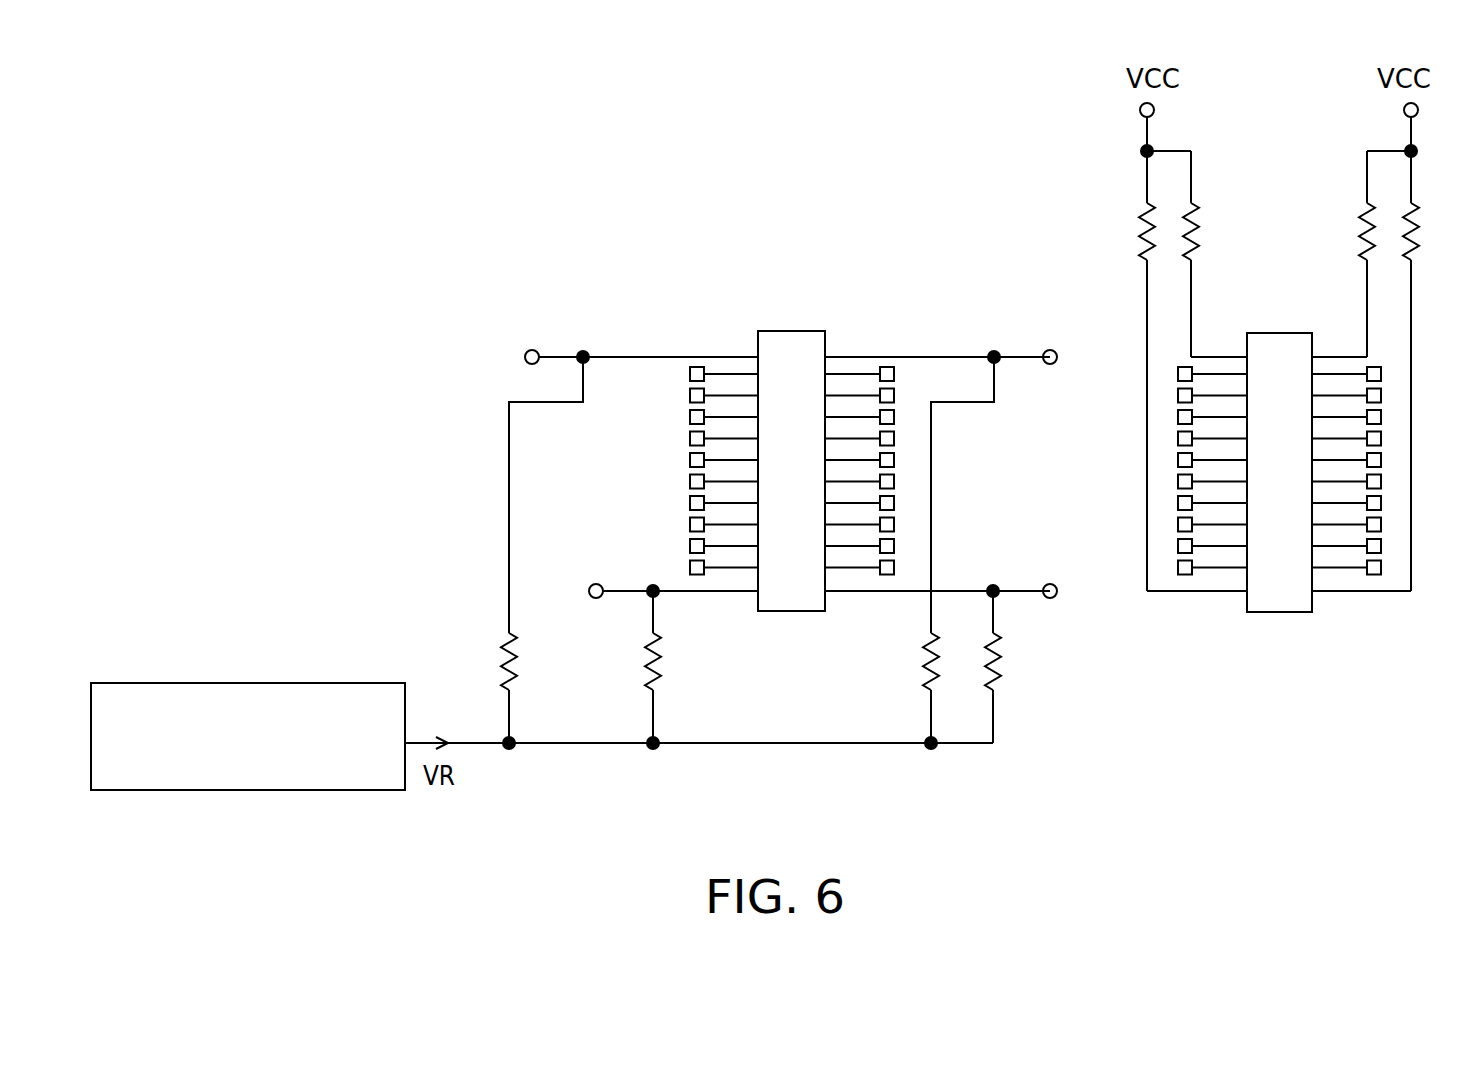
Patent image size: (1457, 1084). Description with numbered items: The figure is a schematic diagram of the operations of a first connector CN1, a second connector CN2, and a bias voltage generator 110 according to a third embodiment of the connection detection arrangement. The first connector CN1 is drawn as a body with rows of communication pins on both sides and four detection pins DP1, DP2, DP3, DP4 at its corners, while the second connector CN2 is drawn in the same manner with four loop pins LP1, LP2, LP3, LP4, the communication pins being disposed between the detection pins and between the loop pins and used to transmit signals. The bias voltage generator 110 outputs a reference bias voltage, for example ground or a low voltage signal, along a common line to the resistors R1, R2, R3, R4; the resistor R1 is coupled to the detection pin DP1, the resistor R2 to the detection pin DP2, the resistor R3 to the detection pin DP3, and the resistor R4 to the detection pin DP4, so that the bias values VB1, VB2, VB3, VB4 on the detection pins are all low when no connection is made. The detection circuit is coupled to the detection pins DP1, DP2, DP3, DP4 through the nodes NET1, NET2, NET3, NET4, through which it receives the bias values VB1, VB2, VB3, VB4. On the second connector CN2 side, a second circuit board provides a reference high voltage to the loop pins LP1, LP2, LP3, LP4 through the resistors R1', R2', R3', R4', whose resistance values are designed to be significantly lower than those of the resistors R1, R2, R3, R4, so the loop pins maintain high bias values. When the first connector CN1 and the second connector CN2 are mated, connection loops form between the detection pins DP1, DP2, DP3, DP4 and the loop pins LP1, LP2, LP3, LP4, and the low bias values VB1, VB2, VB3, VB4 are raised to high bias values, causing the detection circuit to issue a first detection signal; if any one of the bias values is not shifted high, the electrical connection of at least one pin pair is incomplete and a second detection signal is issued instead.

The bias voltage generator 110 is at (406, 703).
The resistor R1 is at (493, 691).
The resistor R2 is at (635, 691).
The resistor R3 is at (912, 689).
The resistor R4 is at (1015, 688).
The resistor R1' is at (1215, 268).
The resistor R2' is at (1171, 389).
The resistor R3' is at (1343, 267).
The resistor R4' is at (1384, 389).
The first connector CN1 is at (766, 474).
The second connector CN2 is at (1255, 474).
The node NET1 is at (536, 350).
The node NET2 is at (600, 583).
The node NET3 is at (1054, 350).
The node NET4 is at (1054, 584).
The bias value VB1 is at (606, 343).
The bias value VB2 is at (628, 610).
The bias value VB3 is at (930, 343).
The bias value VB4 is at (1017, 609).
The detection pin DP1 is at (757, 355).
The detection pin DP2 is at (757, 592).
The detection pin DP3 is at (826, 355).
The detection pin DP4 is at (826, 592).
The loop pin LP1 is at (1247, 356).
The loop pin LP2 is at (1246, 592).
The loop pin LP3 is at (1312, 356).
The loop pin LP4 is at (1314, 592).